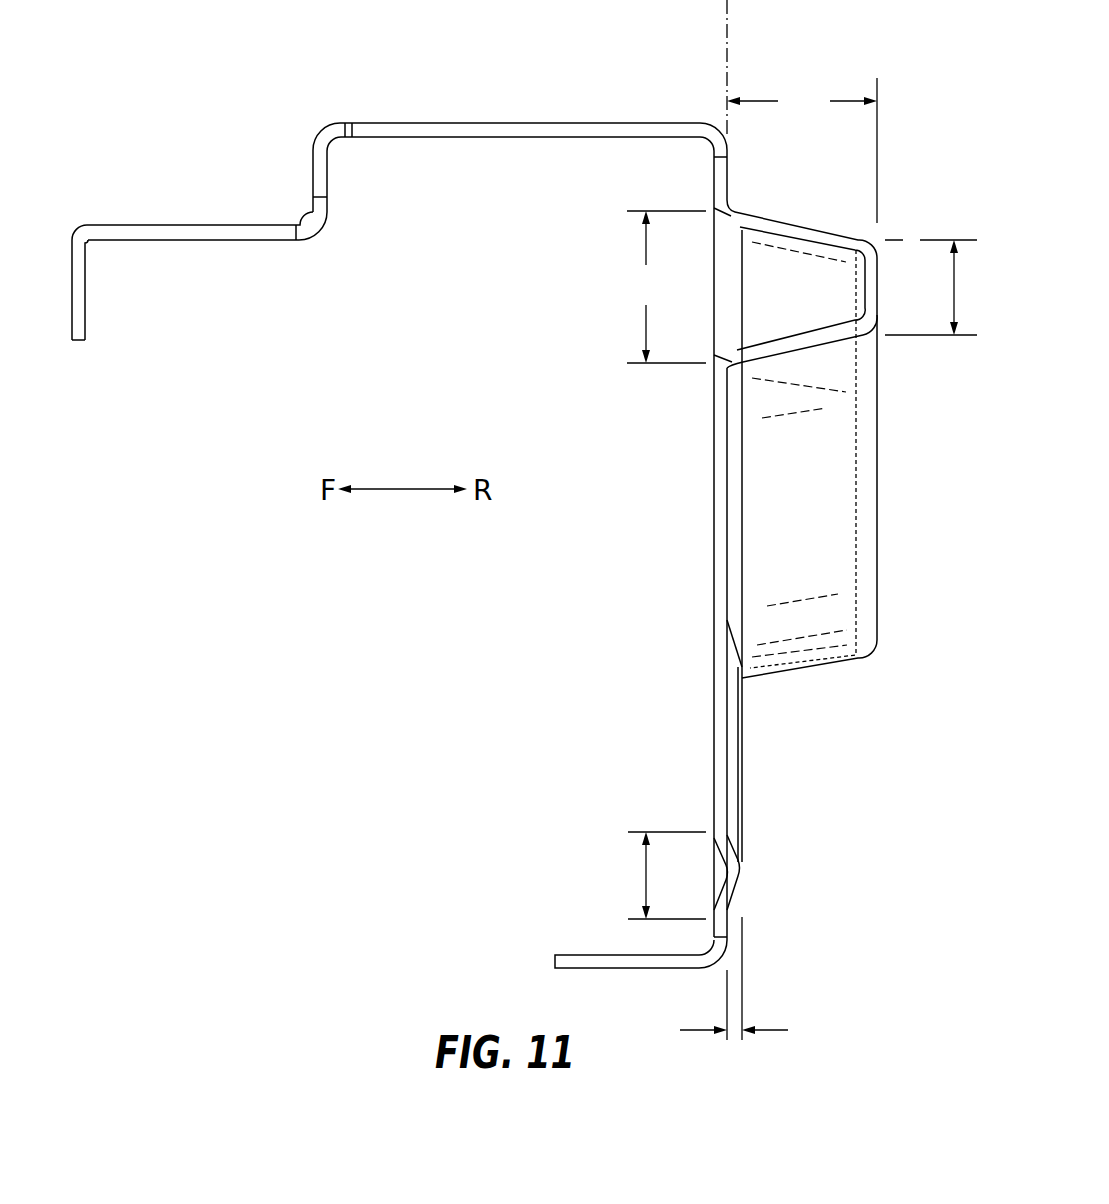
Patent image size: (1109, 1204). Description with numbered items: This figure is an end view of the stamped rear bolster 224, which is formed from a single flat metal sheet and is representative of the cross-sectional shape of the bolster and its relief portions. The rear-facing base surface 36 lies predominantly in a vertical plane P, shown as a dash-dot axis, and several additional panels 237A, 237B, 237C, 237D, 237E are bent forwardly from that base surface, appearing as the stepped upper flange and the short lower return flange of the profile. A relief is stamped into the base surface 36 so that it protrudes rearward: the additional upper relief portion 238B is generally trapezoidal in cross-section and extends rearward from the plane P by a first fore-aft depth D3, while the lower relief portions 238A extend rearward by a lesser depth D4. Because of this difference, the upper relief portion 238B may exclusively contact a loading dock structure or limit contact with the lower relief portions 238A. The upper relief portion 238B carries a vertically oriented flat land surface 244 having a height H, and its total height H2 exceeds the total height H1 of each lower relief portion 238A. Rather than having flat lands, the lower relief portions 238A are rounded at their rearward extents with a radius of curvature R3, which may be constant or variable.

The rear bolster 224 is at (519, 487).
The additional panel 237A is at (475, 128).
The additional panel 237B is at (318, 175).
The additional panel 237C is at (182, 225).
The additional panel 237D is at (87, 318).
The additional panel 237E is at (594, 954).
The lower relief portion 238A is at (736, 742).
The upper relief portion 238B is at (840, 412).
The flat land surface 244 is at (884, 267).
The base surface 36 is at (743, 557).
The vertical plane P is at (725, 42).
The first fore-aft depth D3 is at (802, 150).
The depth D4 is at (768, 1028).
The height H is at (932, 287).
The total height H1 is at (643, 878).
The total height H2 is at (666, 287).
The radius of curvature R3 is at (754, 867).